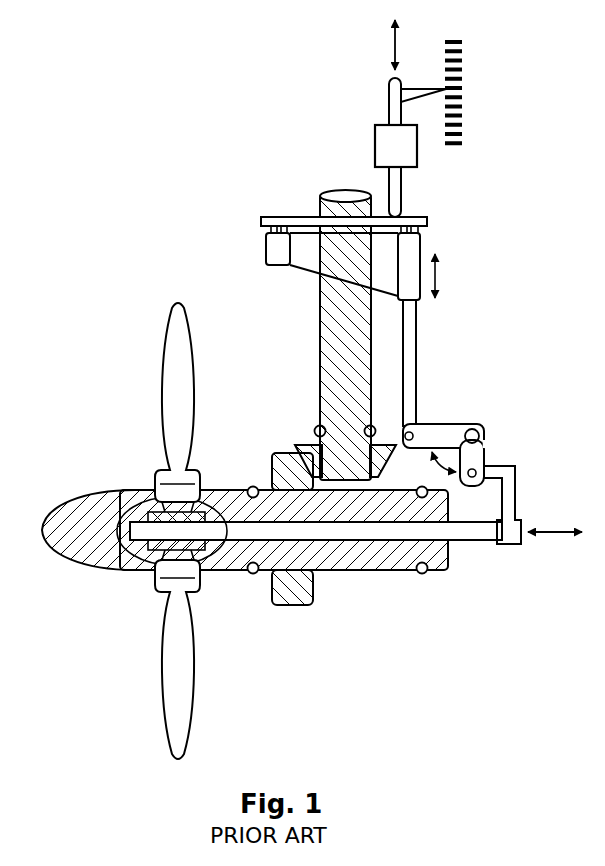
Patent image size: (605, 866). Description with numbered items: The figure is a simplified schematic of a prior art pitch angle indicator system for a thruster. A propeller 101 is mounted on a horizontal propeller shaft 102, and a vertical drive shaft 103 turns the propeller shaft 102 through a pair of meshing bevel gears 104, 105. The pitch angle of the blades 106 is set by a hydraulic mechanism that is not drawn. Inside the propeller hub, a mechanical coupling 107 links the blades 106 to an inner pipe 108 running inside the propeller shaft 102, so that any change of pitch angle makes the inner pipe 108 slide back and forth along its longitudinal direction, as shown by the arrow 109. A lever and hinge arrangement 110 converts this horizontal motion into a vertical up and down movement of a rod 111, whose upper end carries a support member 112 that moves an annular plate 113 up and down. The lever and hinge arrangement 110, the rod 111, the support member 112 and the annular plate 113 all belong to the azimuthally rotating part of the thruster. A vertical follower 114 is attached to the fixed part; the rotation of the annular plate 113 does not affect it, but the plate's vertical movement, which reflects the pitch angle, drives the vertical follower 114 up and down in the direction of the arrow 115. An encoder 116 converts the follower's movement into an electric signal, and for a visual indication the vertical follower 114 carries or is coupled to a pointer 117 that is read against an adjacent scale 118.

The propeller 101 is at (90, 510).
The horizontal propeller shaft 102 is at (358, 575).
The vertical drive shaft 103 is at (333, 343).
The bevel gear 104 is at (318, 444).
The bevel gear 105 is at (280, 455).
The blades 106 is at (165, 347).
The mechanical coupling 107 is at (135, 570).
The inner pipe 108 is at (462, 545).
The arrow 109 is at (548, 537).
The lever and hinge arrangement 110 is at (535, 500).
The rod 111 is at (408, 360).
The support member 112 is at (312, 250).
The annular plate 113 is at (292, 220).
The vertical follower 114 is at (388, 95).
The arrow 115 is at (392, 45).
The encoder 116 is at (417, 158).
The pointer 117 is at (420, 90).
The scale 118 is at (462, 80).